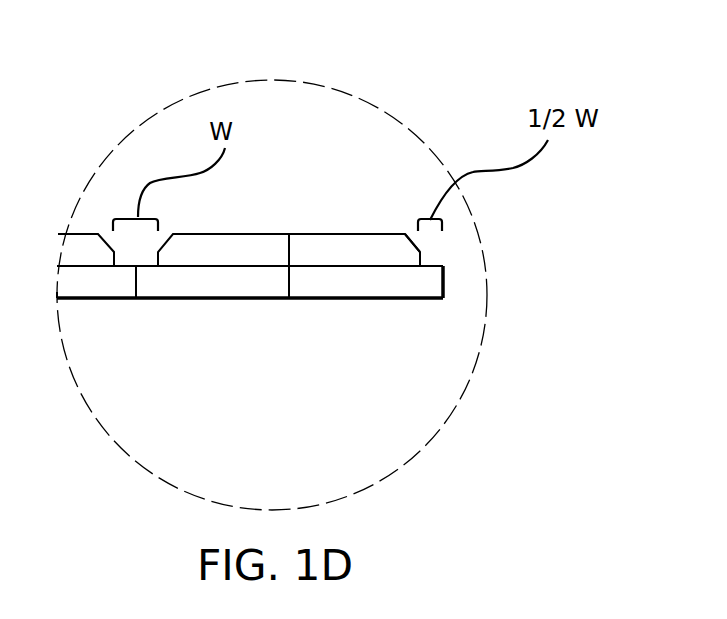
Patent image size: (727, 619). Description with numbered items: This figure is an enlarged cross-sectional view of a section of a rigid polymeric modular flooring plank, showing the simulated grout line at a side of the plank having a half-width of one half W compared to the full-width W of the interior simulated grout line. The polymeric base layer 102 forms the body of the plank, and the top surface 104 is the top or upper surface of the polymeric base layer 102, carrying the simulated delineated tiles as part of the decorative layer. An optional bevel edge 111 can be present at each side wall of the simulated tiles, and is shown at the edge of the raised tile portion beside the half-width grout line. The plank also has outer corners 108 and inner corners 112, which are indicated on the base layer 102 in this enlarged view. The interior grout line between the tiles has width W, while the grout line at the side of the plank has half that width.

The polymeric base layer 102 is at (443, 282).
The top surface 104 is at (233, 234).
The outer corners 108 is at (289, 280).
The bevel edge 111 is at (413, 234).
The inner corners 112 is at (136, 280).